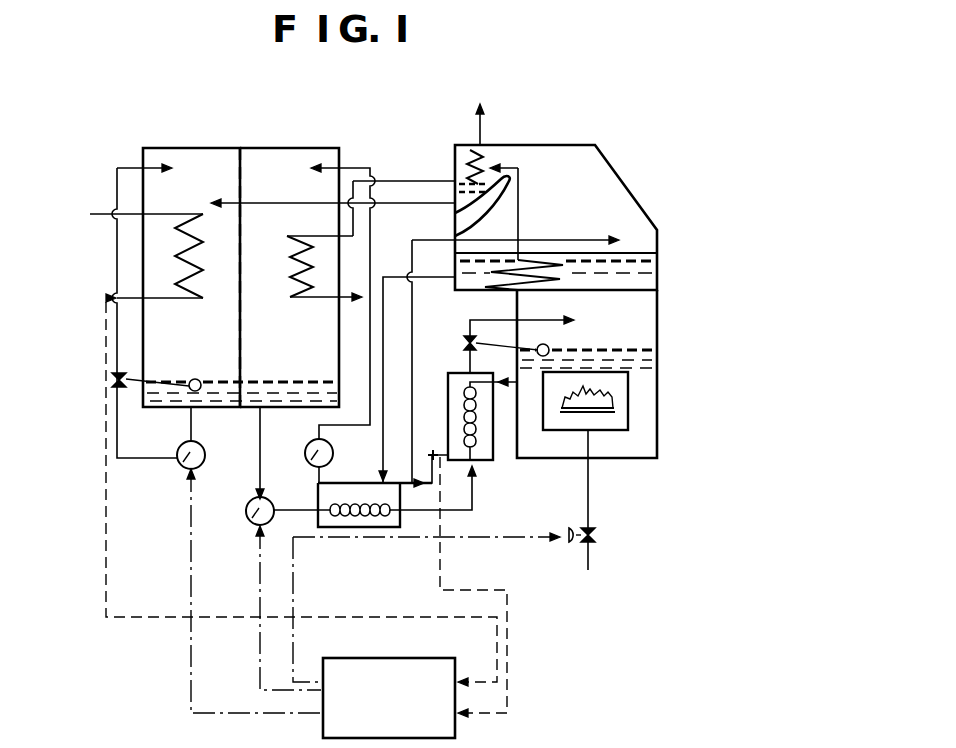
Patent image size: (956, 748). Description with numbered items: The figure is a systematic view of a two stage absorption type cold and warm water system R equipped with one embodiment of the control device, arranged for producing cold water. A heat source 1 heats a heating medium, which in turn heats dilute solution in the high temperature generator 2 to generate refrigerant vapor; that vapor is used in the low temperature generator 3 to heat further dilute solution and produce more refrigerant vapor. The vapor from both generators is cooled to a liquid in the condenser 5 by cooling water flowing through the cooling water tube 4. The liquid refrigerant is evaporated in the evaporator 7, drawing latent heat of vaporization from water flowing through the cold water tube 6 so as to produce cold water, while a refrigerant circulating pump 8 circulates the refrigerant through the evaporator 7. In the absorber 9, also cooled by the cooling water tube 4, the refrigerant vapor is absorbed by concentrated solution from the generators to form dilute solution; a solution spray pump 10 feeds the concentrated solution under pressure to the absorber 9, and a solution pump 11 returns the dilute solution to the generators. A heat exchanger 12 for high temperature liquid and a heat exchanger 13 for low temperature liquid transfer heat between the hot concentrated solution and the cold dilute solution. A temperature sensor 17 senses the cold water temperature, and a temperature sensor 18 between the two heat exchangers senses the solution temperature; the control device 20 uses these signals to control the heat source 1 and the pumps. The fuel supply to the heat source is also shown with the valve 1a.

The heat source 1 is at (616, 410).
The fuel valve 1a is at (565, 544).
The high temperature generator 2 is at (645, 323).
The low temperature generator 3 is at (470, 288).
The cooling water tube 4 is at (478, 128).
The condenser 5 is at (456, 168).
The cold water tube 6 is at (100, 212).
The evaporator 7 is at (203, 163).
The refrigerant circulating pump 8 is at (180, 464).
The absorber 9 is at (285, 163).
The solution spray pump 10 is at (306, 455).
The solution pump 11 is at (246, 511).
The heat exchanger for high temperature liquid 12 is at (486, 460).
The heat exchanger for low temperature liquid 13 is at (375, 528).
The temperature sensor 17 is at (104, 303).
The temperature sensor 18 is at (433, 453).
The control device 20 is at (398, 658).
The cold and warm water system R is at (527, 145).